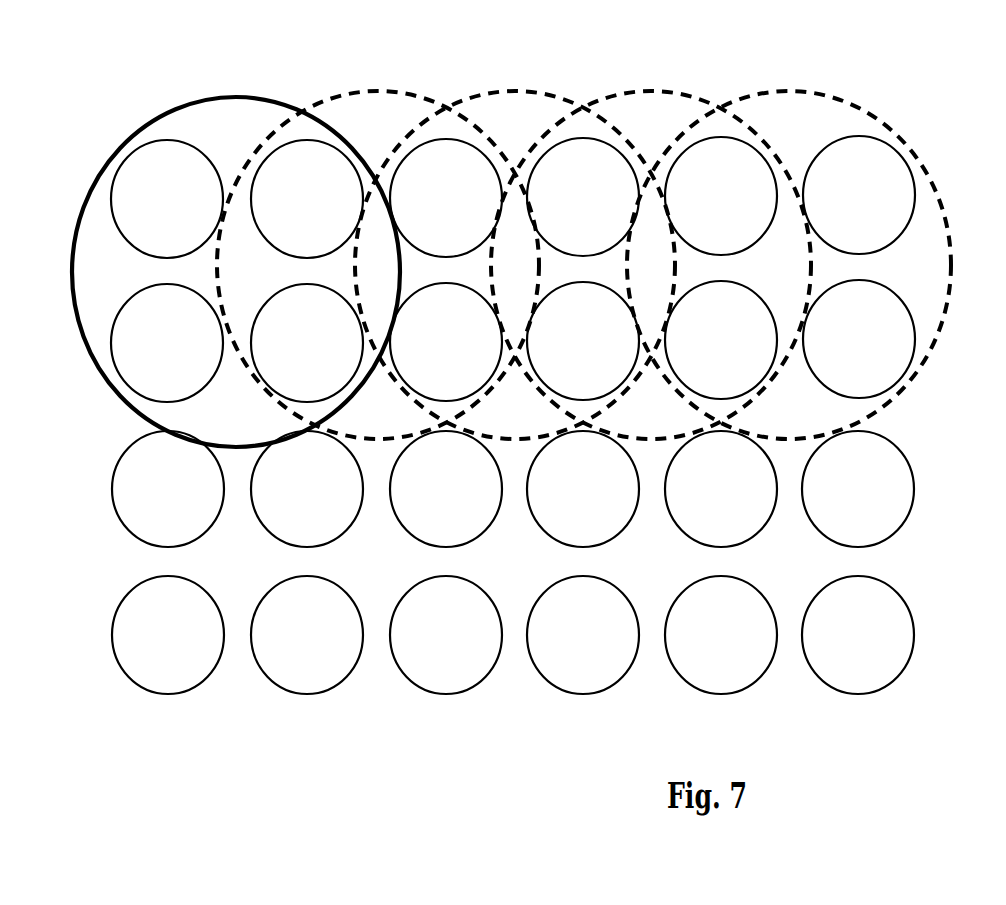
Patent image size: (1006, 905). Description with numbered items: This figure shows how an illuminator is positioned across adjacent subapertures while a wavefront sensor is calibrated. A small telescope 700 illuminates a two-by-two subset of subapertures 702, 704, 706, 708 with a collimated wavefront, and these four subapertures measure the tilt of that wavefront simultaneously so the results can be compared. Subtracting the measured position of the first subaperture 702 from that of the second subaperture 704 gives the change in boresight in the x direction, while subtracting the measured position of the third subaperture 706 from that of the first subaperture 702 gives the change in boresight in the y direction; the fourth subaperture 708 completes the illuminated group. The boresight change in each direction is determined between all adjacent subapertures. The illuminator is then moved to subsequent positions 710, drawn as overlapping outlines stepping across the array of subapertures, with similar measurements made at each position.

The small telescope 700 is at (163, 113).
The first subaperture 702 is at (167, 199).
The second subaperture 704 is at (307, 199).
The third subaperture 706 is at (167, 343).
The fourth subaperture 708 is at (307, 343).
The subsequent positions 710 is at (754, 90).